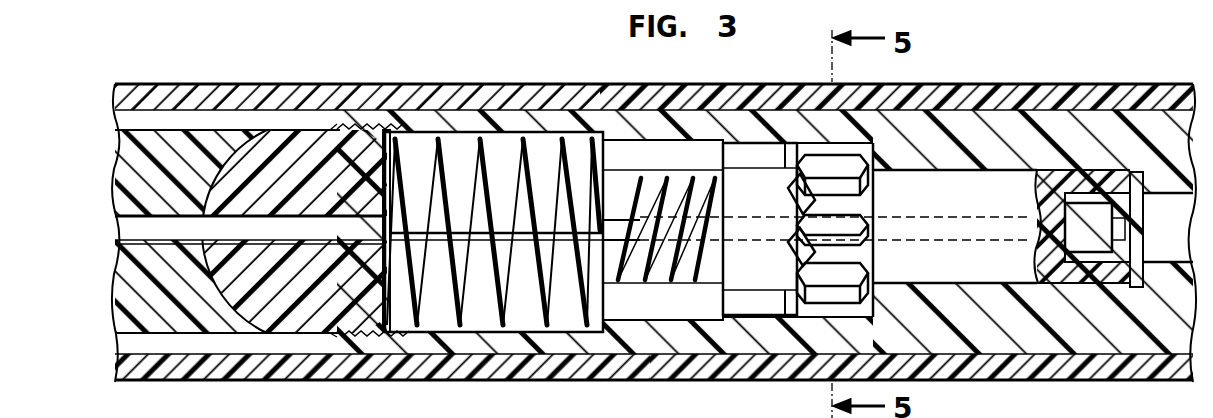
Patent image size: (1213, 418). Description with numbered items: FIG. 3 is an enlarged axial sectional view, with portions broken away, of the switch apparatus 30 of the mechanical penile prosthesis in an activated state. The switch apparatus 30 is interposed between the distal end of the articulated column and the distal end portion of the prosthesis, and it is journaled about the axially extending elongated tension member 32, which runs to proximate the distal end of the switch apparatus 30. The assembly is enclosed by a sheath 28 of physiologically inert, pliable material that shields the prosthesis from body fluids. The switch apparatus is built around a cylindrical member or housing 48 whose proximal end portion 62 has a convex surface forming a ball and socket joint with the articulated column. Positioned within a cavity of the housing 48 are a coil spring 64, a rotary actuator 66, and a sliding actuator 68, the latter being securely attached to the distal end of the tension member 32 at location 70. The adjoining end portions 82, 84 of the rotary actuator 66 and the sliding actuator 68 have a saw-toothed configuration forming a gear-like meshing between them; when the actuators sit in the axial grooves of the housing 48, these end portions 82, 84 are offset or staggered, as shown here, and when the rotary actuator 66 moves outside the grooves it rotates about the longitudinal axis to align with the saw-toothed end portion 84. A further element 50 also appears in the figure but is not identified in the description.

The sheath 28 is at (197, 92).
The switch apparatus 30 is at (540, 130).
The tension member 32 is at (135, 232).
The housing 48 is at (1128, 327).
The ball 50 is at (124, 280).
The proximal end portion 62 is at (288, 150).
The coil spring 64 is at (431, 138).
The rotary actuator 66 is at (748, 180).
The sliding actuator 68 is at (1077, 284).
The attachment location 70 is at (1100, 230).
The end portion of rotary actuator 82 is at (808, 198).
The end portion of sliding actuator 84 is at (792, 250).